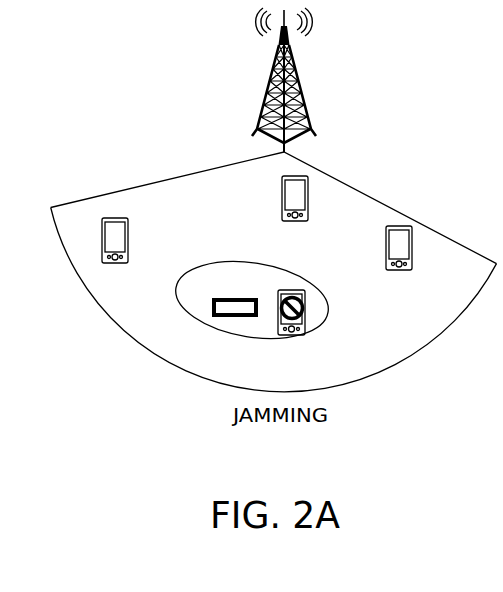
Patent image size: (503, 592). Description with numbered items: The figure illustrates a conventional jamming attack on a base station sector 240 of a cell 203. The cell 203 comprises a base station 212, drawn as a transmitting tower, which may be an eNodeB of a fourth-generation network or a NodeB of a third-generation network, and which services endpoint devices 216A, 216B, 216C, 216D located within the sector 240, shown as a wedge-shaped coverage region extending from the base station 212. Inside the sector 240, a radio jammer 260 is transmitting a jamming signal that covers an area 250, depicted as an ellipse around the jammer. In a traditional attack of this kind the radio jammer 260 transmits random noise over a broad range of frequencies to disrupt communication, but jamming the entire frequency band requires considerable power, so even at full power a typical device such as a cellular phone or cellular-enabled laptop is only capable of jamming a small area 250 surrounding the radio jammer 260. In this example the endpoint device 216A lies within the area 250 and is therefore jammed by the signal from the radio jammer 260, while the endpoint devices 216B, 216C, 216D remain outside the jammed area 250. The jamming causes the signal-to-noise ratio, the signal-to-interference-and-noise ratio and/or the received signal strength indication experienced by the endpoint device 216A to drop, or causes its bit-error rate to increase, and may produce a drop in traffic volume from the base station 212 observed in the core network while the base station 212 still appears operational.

The cell 203 is at (123, 63).
The base station 212 is at (292, 60).
The base station sector 240 is at (225, 206).
The endpoint device 216A is at (291, 336).
The endpoint device 216B is at (115, 264).
The endpoint device 216C is at (295, 222).
The endpoint device 216D is at (399, 271).
The area 250 is at (228, 290).
The radio jammer 260 is at (212, 307).